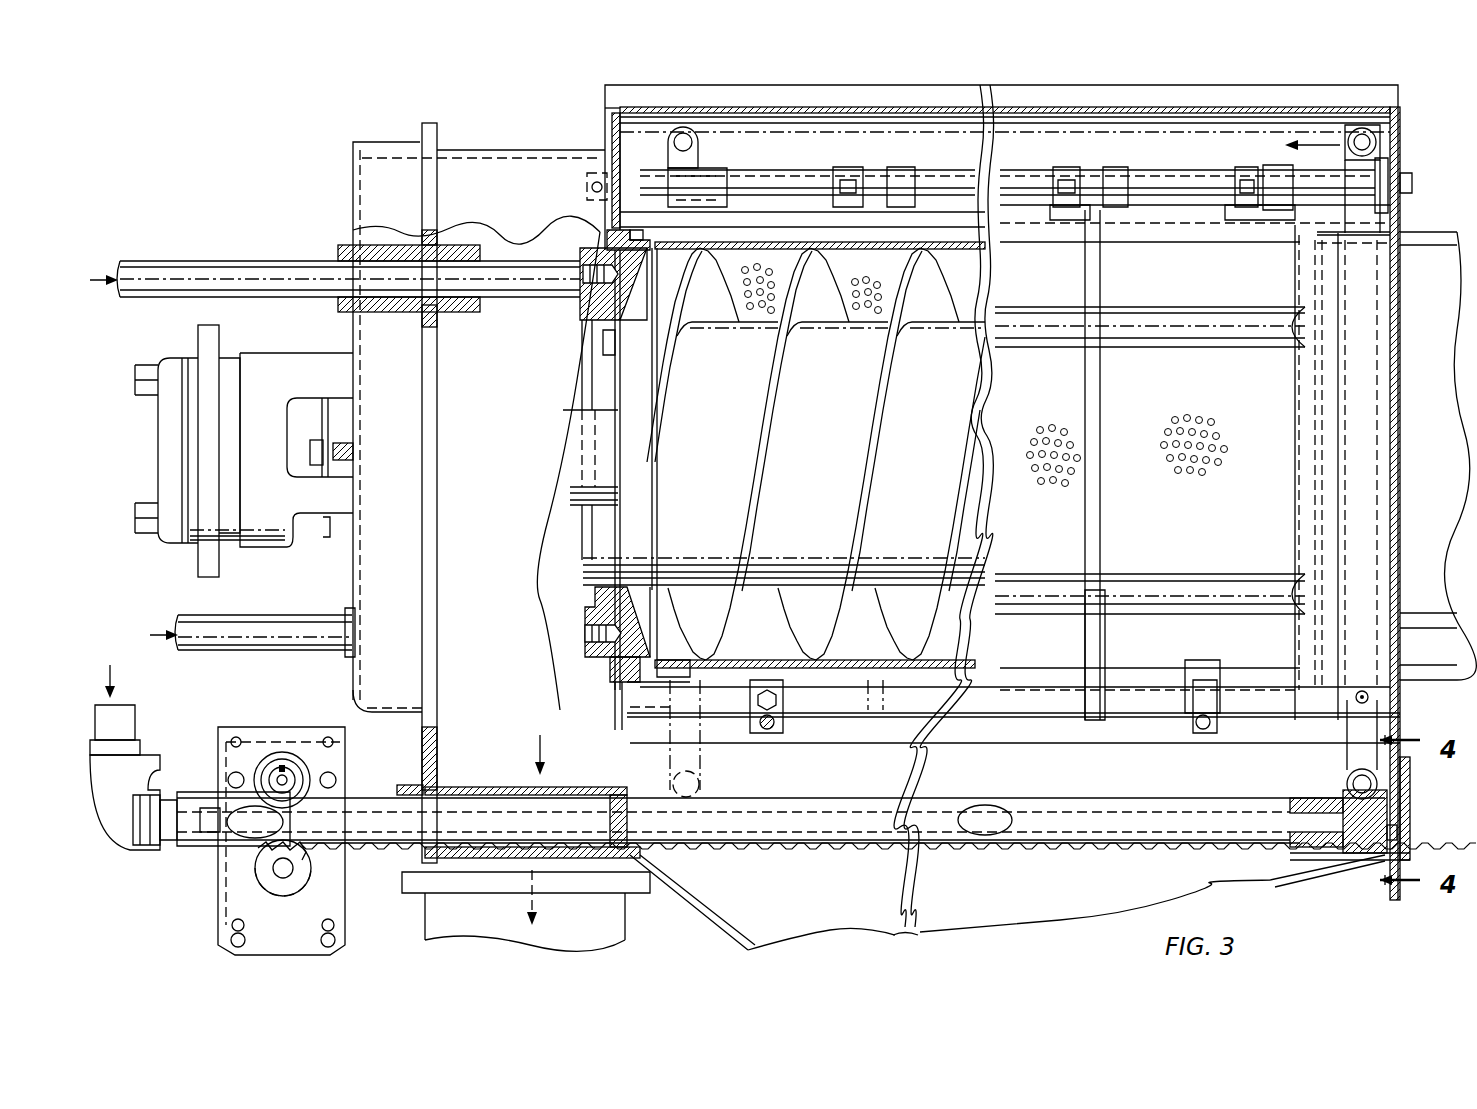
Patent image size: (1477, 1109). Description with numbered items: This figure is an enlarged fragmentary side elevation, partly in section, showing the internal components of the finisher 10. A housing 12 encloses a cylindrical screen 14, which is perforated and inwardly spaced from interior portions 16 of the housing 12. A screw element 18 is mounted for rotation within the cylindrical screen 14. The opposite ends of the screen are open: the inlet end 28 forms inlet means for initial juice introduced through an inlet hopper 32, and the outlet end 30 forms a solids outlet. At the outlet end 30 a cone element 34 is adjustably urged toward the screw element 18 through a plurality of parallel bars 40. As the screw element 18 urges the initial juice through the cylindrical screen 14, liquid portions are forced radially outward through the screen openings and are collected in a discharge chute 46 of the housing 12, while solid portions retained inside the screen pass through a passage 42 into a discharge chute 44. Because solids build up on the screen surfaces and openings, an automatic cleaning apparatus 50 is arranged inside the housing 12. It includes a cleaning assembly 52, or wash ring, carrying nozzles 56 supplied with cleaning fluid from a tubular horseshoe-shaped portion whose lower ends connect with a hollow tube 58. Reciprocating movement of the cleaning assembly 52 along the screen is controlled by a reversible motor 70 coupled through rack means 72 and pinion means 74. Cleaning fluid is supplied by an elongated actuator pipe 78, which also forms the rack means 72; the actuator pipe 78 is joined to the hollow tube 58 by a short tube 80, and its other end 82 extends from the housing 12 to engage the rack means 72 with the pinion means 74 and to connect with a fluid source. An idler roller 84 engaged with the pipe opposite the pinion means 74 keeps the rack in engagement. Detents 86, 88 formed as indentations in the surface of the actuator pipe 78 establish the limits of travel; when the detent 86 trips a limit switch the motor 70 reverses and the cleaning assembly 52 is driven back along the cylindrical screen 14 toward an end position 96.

The finisher 10 is at (575, 106).
The housing 12 is at (778, 107).
The cylindrical screen 14 is at (770, 242).
The interior portions 16 is at (915, 118).
The screw element 18 is at (822, 471).
The inlet end 28 is at (1265, 385).
The outlet end 30 is at (667, 241).
The inlet hopper 32 is at (1422, 232).
The cone element 34 is at (607, 330).
The parallel bars 40 is at (252, 262).
The passage 42 is at (605, 580).
The discharge chute 44 is at (632, 925).
The discharge chute 46 is at (830, 905).
The automatic cleaning apparatus 50 is at (1340, 133).
The cleaning assembly 52 is at (1380, 142).
The nozzles 56 is at (1370, 698).
The hollow tube 58 is at (1347, 780).
The reversible motor 70 is at (220, 925).
The rack means 72 is at (378, 850).
The pinion means 74 is at (262, 868).
The actuator pipe 78 is at (790, 798).
The short tube 80 is at (1388, 803).
The end 82 is at (150, 850).
The idler roller 84 is at (290, 760).
The detent 86 is at (995, 816).
The detent 88 is at (250, 815).
The end position 96 is at (1364, 127).